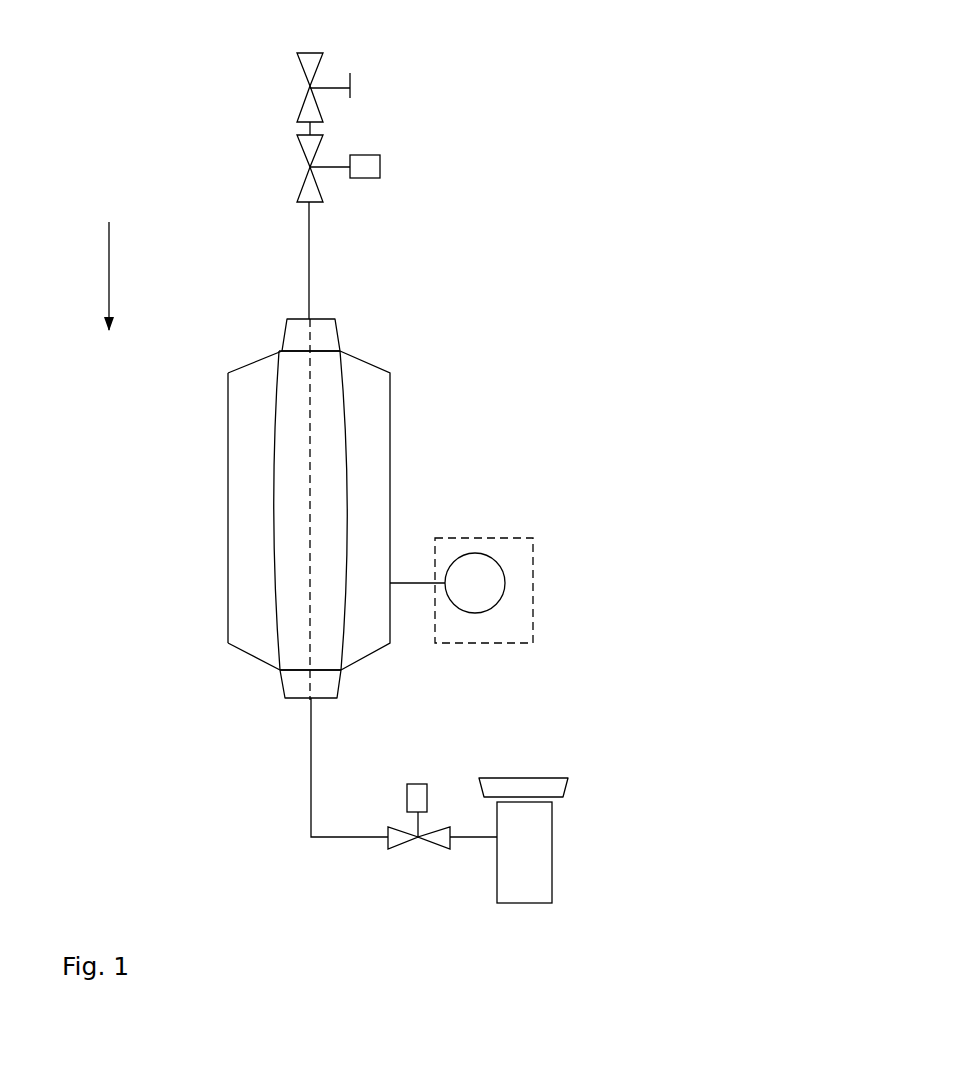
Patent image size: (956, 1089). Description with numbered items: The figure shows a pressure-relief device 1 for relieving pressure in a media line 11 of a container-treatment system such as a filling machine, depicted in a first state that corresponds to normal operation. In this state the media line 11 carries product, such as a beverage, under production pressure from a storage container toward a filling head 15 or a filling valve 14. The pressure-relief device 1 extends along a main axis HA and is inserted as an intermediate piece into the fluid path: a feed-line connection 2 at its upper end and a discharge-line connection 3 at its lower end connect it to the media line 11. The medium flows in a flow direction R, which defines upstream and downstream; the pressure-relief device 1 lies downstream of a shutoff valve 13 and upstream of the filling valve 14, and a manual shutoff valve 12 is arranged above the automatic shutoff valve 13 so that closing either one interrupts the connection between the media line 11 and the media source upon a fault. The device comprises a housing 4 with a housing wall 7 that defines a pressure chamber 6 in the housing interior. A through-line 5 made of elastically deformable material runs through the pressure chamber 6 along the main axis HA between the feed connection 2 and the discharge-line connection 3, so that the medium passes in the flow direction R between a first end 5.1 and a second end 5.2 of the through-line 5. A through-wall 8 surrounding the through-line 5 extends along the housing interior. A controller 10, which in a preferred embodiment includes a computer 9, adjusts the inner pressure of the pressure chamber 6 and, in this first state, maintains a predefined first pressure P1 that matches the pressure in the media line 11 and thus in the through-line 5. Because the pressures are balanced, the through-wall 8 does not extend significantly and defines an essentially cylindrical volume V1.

The pressure-relief device 1 is at (602, 63).
The feed-line connection 2 is at (275, 322).
The discharge-line connection 3 is at (285, 690).
The housing 4 is at (222, 497).
The through-line 5 is at (330, 468).
The first end of the through-line 5.1 is at (332, 348).
The second end of the through-line 5.2 is at (340, 675).
The pressure chamber 6 is at (238, 624).
The housing wall 7 is at (228, 560).
The through-wall 8 is at (345, 415).
The computer 9 is at (512, 629).
The controller 10 is at (485, 585).
The media line 11 is at (308, 240).
The manual shutoff valve 12 is at (307, 65).
The shutoff valve 13 is at (310, 148).
The filling valve 14 is at (400, 842).
The filling head 15 is at (535, 890).
The main axis HA is at (308, 385).
The essentially cylindrical volume V1 is at (343, 380).
The first pressure P1 is at (237, 645).
The flow direction R is at (99, 276).